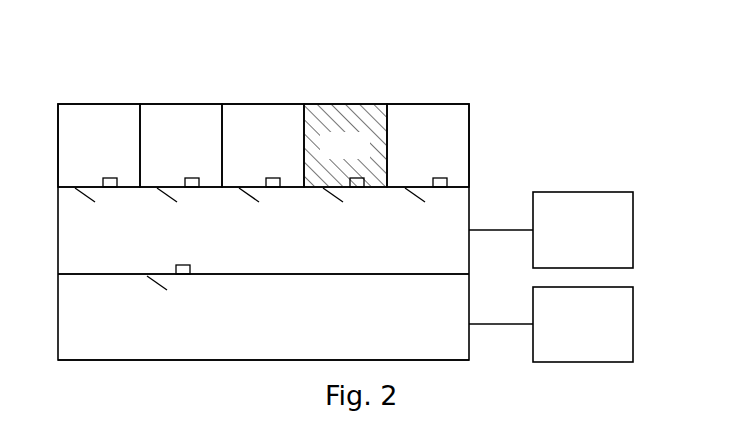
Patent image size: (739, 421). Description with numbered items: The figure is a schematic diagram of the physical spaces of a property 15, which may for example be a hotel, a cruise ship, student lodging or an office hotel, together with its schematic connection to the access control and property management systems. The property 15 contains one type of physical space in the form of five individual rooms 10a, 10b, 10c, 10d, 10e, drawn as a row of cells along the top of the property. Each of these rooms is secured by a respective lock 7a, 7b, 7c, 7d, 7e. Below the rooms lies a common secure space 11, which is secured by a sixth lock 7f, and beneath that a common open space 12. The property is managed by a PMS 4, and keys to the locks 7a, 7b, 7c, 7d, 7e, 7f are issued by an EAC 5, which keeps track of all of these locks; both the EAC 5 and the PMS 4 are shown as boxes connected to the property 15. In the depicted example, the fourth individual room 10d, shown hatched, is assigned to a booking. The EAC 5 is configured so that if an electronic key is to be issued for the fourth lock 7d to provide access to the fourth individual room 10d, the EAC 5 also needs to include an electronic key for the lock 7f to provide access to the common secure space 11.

The property 15 is at (537, 80).
The first individual room 10a is at (121, 159).
The second individual room 10b is at (203, 159).
The third individual room 10c is at (284, 159).
The fourth individual room 10d is at (368, 159).
The fifth individual room 10e is at (450, 159).
The first lock 7a is at (112, 188).
The second lock 7b is at (194, 188).
The third lock 7c is at (275, 188).
The fourth lock 7d is at (359, 188).
The fifth lock 7e is at (442, 188).
The sixth lock 7f is at (185, 275).
The common secure space 11 is at (277, 241).
The common open space 12 is at (277, 331).
The EAC 5 is at (591, 226).
The PMS 4 is at (591, 321).